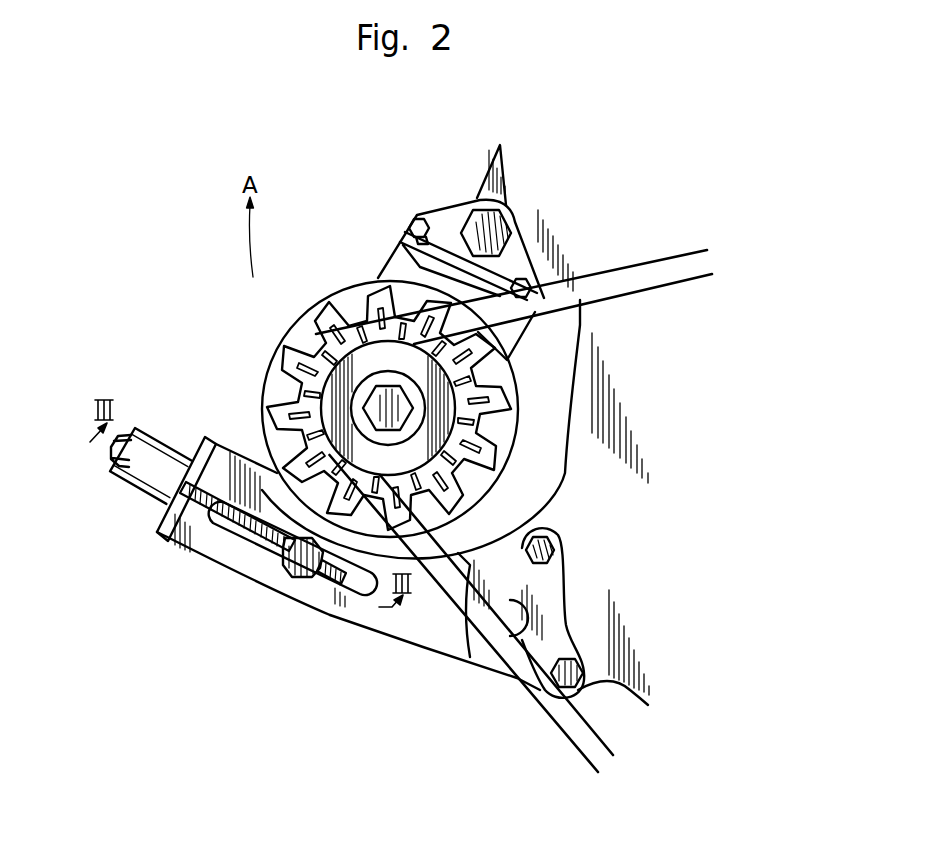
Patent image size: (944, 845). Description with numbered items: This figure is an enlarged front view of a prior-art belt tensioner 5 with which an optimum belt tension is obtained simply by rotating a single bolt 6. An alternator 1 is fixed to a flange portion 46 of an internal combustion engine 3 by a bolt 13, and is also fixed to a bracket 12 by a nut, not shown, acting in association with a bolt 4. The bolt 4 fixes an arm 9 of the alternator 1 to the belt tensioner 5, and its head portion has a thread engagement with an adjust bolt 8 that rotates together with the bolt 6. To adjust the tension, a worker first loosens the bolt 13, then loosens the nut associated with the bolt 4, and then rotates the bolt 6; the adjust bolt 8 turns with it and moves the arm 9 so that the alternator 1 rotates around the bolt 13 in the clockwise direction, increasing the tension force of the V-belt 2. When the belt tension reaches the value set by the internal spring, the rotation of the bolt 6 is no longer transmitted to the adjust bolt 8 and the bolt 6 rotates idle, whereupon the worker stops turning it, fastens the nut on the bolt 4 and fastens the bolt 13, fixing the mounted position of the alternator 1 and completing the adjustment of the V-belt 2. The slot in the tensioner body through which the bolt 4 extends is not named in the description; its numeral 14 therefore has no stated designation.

The alternator 1 is at (353, 282).
The V-belt 2 is at (553, 725).
The internal combustion engine 3 is at (608, 163).
The bolt 4 is at (302, 579).
The belt tensioner 5 is at (251, 583).
The bolt 6 is at (118, 440).
The adjust bolt 8 is at (207, 510).
The arm 9 is at (272, 480).
The bracket 12 is at (373, 632).
The bolt 13 is at (500, 228).
The slot 14 is at (291, 578).
The flange portion 46 is at (480, 189).